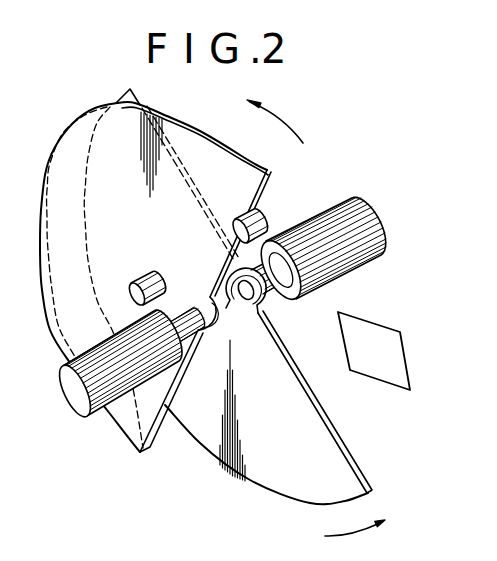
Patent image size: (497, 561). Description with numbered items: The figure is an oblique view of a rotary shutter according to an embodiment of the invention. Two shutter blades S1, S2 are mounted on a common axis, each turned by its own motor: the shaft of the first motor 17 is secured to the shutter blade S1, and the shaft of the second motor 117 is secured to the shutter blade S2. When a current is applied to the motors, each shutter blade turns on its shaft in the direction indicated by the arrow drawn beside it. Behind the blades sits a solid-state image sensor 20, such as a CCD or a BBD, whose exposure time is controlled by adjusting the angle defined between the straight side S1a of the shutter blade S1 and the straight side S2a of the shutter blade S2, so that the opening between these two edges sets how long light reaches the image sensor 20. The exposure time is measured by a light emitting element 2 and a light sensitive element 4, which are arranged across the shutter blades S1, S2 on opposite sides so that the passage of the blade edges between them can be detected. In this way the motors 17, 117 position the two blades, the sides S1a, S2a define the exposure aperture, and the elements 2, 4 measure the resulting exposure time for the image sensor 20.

The light emitting element 2 is at (150, 276).
The light sensitive element 4 is at (262, 214).
The first motor 17 is at (113, 405).
The second motor 117 is at (375, 250).
The solid-state image sensor 20 is at (350, 316).
The shutter blade S1 is at (190, 294).
The side of shutter blade S1 S1a is at (264, 184).
The shutter blade S2 is at (294, 398).
The side of shutter blade S2 S2a is at (352, 457).